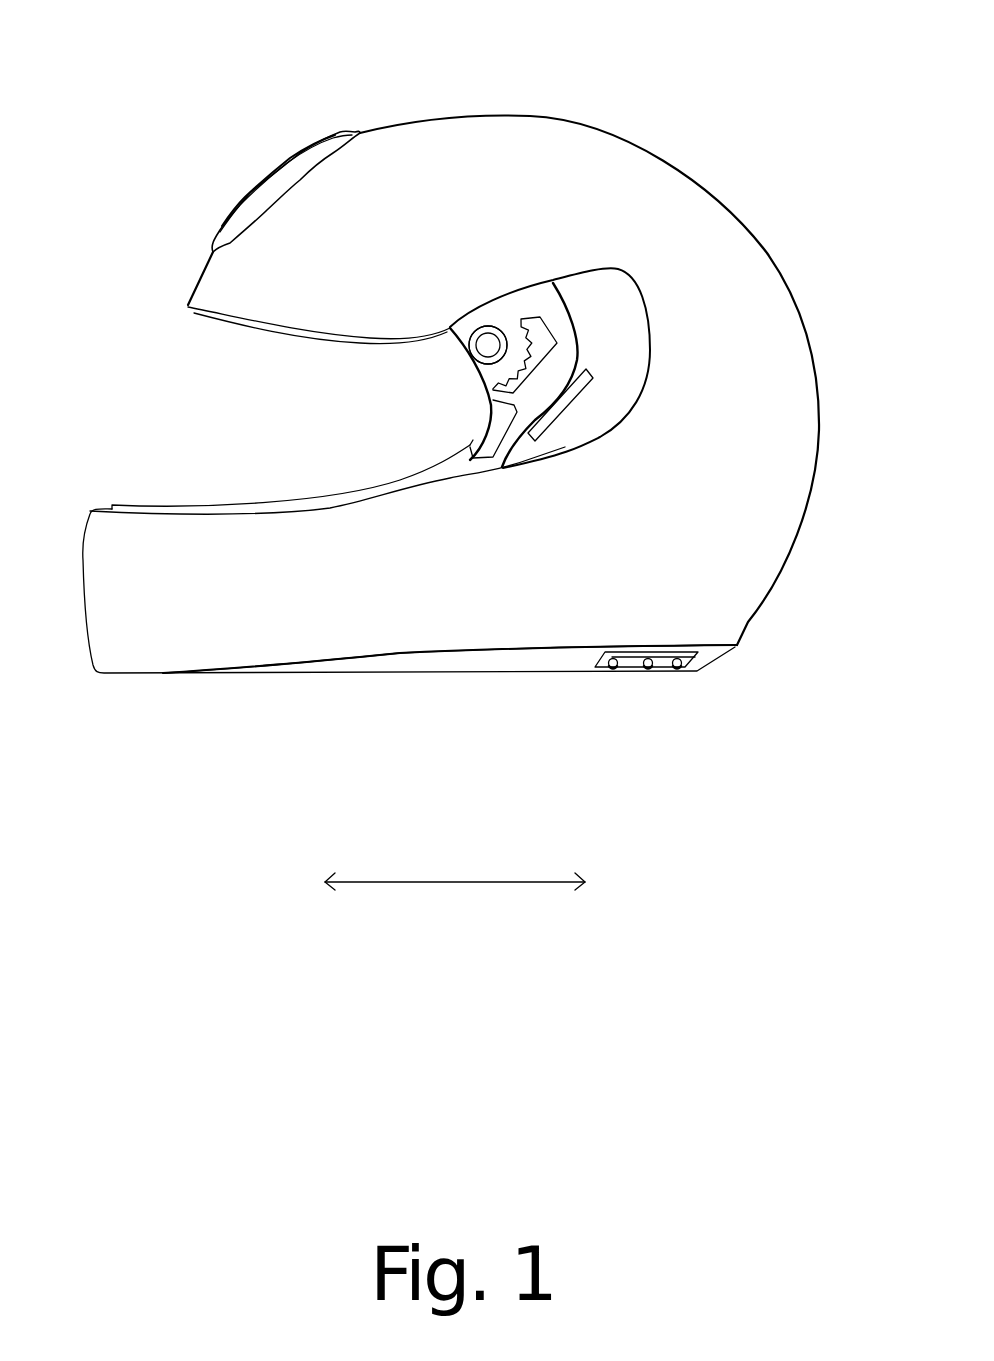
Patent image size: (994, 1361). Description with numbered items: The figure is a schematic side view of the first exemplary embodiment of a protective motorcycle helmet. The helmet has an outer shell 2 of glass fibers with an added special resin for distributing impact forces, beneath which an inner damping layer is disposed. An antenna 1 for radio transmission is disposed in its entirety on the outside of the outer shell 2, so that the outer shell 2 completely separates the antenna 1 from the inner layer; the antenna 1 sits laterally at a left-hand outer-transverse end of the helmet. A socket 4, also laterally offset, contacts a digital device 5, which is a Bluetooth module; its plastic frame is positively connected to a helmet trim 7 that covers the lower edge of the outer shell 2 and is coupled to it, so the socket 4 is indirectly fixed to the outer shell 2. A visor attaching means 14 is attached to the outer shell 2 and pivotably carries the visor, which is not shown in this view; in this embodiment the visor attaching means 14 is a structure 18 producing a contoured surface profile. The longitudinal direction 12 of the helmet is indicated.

The antenna 1 is at (577, 393).
The outer shell 2 is at (648, 195).
The socket 4 is at (620, 698).
The digital device 5 is at (663, 667).
The helmet trim 7 is at (485, 660).
The longitudinal direction 12 is at (448, 883).
The visor attaching means 14 is at (524, 309).
The structure 18 is at (488, 345).